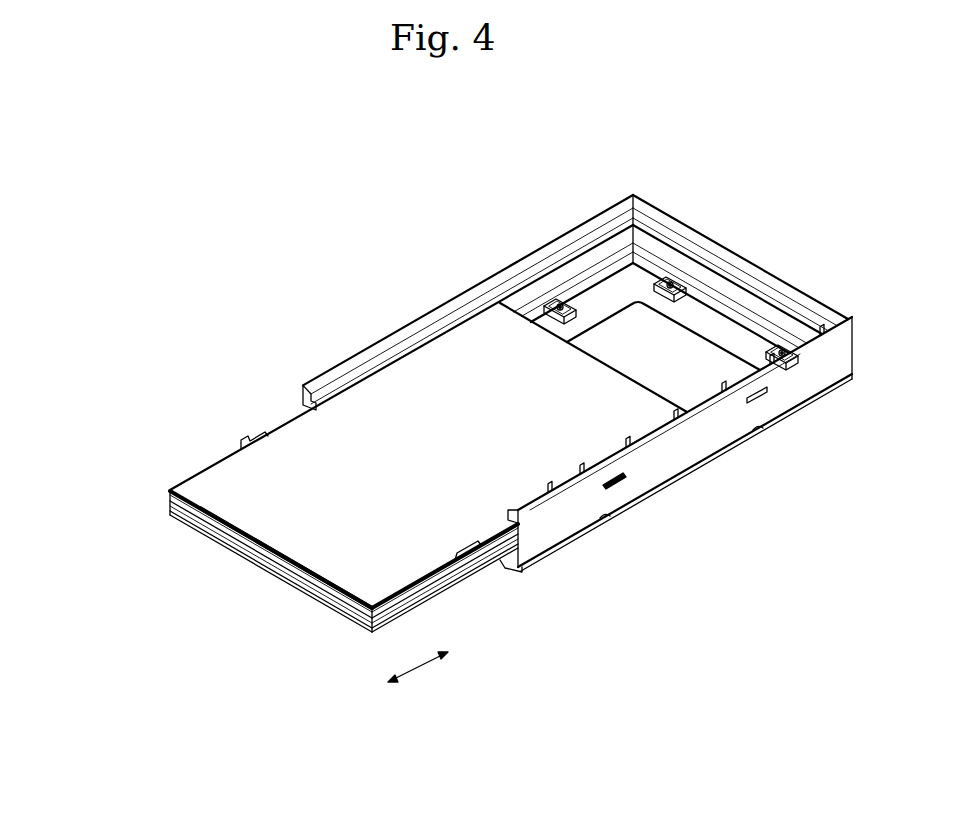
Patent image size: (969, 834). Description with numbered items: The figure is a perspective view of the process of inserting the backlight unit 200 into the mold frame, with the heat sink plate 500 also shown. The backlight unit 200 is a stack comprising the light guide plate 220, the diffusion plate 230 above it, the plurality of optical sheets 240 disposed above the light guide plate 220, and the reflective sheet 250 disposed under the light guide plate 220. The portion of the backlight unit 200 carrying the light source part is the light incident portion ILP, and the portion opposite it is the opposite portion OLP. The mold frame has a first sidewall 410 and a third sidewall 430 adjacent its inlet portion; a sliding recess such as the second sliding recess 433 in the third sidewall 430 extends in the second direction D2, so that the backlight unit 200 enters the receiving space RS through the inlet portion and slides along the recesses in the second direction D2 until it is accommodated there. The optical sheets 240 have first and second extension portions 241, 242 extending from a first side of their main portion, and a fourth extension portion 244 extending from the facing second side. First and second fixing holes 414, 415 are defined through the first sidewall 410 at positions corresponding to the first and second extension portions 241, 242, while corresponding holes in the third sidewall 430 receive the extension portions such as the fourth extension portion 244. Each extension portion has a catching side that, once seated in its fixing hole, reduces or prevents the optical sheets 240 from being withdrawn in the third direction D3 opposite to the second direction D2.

The backlight unit 200 is at (368, 428).
The optical sheets 240 is at (170, 490).
The diffusion plate 230 is at (172, 496).
The light guide plate 220 is at (172, 503).
The reflective sheet 250 is at (311, 571).
The fourth extension portion 244 is at (250, 436).
The first extension portion 241 is at (488, 570).
The second extension portion 242 is at (617, 483).
The first sidewall 410 is at (693, 444).
The first fixing hole 414 is at (626, 477).
The second fixing hole 415 is at (771, 392).
The third sidewall 430 is at (442, 302).
The second sliding recess 433 is at (588, 263).
The heat sink plate 500 is at (523, 570).
The receiving space RS is at (697, 345).
The opposite portion OLP is at (596, 384).
The light incident portion ILP is at (311, 562).
The second direction D2 is at (428, 655).
The third direction D3 is at (364, 699).